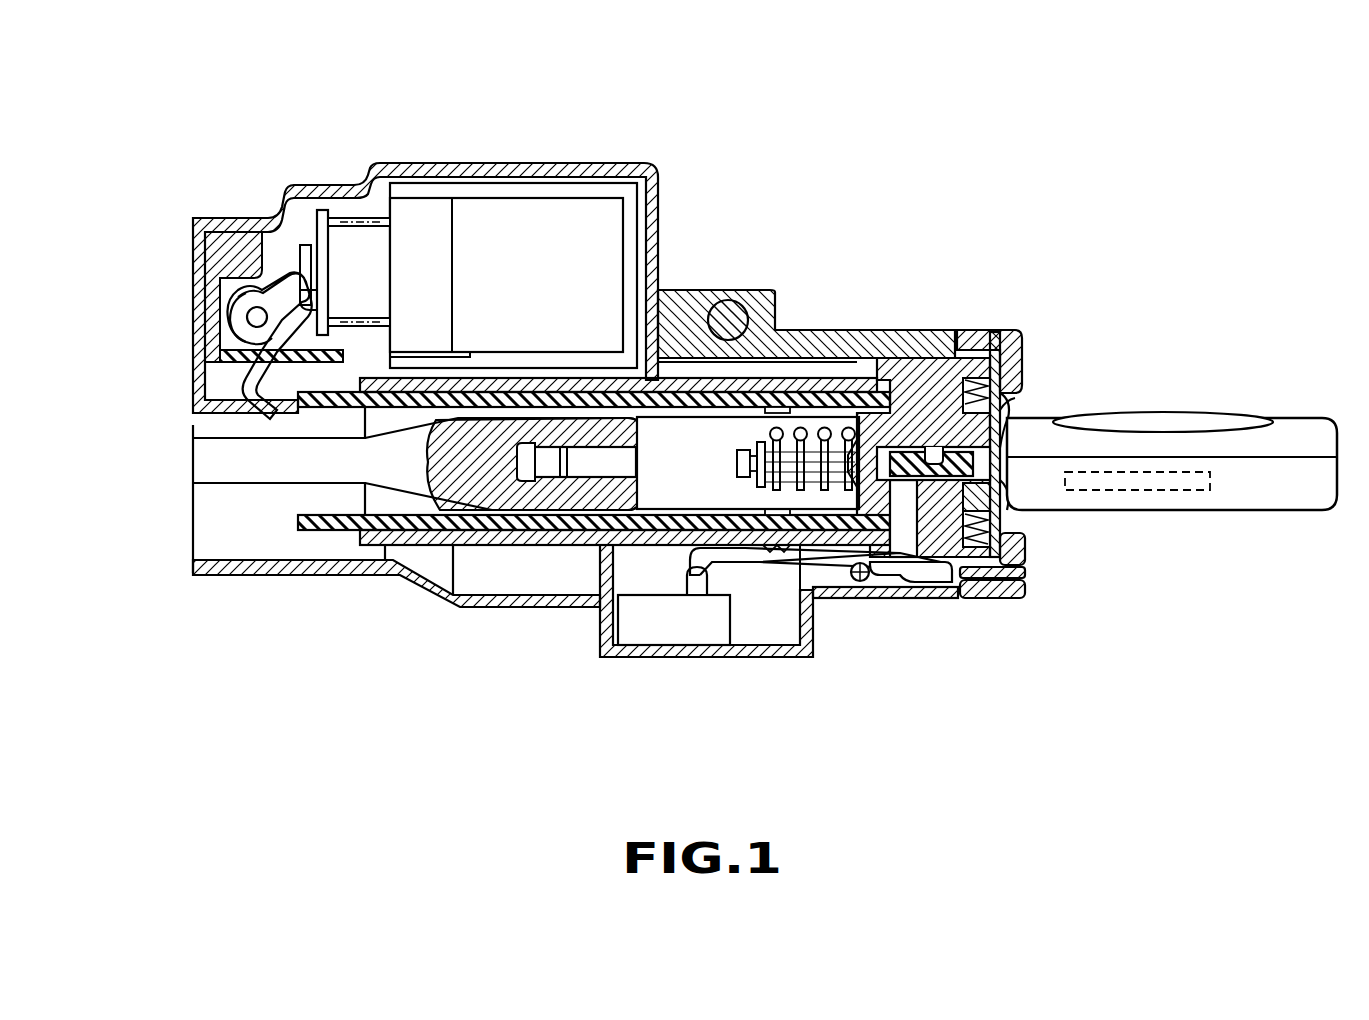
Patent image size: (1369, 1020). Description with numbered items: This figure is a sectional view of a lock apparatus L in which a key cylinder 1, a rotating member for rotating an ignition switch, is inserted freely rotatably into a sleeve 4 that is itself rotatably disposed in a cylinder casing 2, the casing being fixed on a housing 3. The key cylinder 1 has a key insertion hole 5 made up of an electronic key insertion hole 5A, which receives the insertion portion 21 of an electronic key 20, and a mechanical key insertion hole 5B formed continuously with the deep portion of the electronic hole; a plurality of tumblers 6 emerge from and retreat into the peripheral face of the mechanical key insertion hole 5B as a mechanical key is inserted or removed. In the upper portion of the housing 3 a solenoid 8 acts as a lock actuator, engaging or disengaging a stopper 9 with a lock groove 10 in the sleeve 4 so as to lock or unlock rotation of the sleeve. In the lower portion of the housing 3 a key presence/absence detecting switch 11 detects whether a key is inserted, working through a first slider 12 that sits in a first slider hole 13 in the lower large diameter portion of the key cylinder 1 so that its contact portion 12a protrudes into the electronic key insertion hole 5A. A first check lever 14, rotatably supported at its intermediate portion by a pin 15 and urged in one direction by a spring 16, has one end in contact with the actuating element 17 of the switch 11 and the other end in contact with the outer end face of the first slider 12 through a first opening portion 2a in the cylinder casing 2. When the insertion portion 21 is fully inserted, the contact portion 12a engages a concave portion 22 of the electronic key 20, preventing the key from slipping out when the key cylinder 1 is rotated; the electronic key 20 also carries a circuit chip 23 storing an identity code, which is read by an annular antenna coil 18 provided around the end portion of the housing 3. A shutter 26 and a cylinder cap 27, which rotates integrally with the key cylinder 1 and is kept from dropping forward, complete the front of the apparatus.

The lock apparatus L is at (930, 132).
The key cylinder 1 is at (676, 430).
The cylinder casing 2 is at (523, 547).
The first opening portion 2a is at (957, 598).
The housing 3 is at (731, 300).
The sleeve 4 is at (343, 524).
The key insertion hole 5 is at (955, 247).
The electronic key insertion hole 5A is at (932, 450).
The mechanical key insertion hole 5B is at (872, 400).
The tumblers 6 is at (740, 470).
The solenoid 8 is at (487, 206).
The stopper 9 is at (236, 392).
The lock groove 10 is at (318, 408).
The key presence/absence detecting switch 11 is at (672, 627).
The first slider 12 is at (930, 565).
The contact portion 12a is at (1000, 472).
The first slider hole 13 is at (888, 562).
The first check lever 14 is at (748, 598).
The pin 15 is at (858, 590).
The spring 16 is at (778, 548).
The actuating element 17 is at (686, 574).
The antenna coil 18 is at (1012, 343).
The electronic key 20 is at (1180, 412).
The insertion portion 21 is at (1005, 452).
The concave portion 22 is at (975, 378).
The circuit chip 23 is at (1133, 472).
The shutter 26 is at (1005, 522).
The cylinder cap 27 is at (1010, 393).